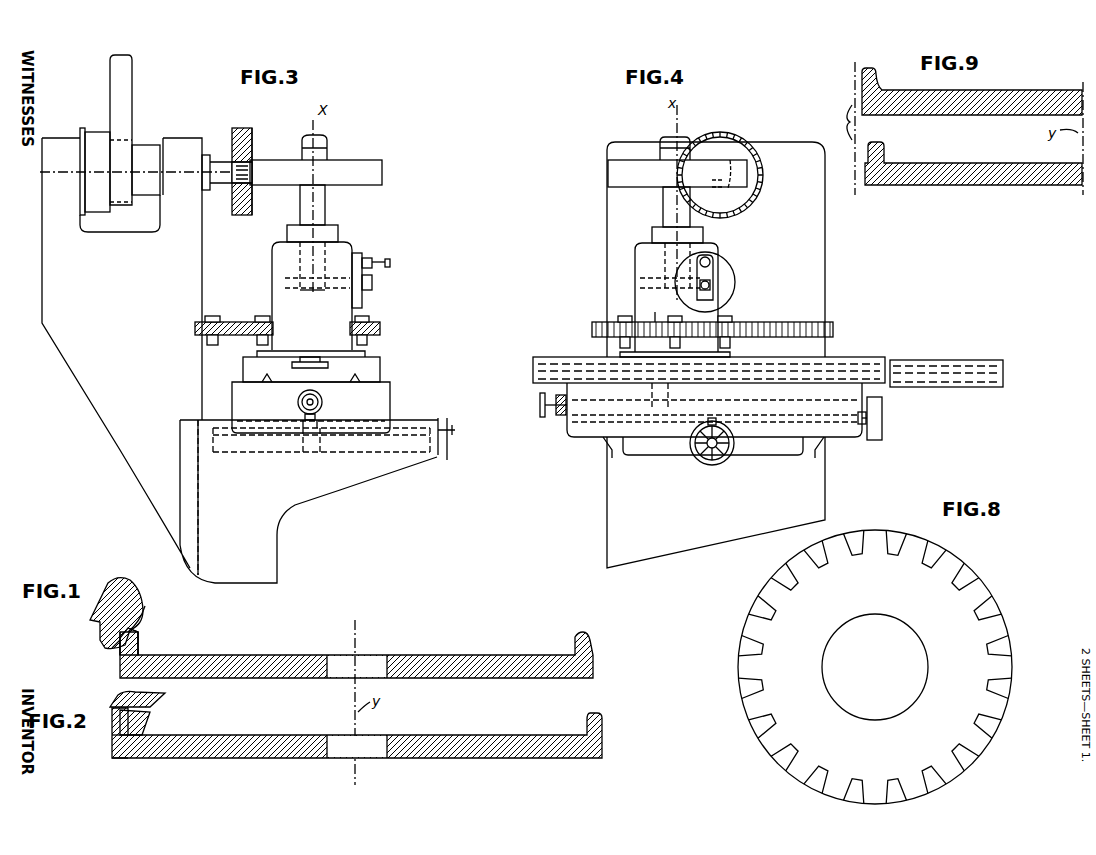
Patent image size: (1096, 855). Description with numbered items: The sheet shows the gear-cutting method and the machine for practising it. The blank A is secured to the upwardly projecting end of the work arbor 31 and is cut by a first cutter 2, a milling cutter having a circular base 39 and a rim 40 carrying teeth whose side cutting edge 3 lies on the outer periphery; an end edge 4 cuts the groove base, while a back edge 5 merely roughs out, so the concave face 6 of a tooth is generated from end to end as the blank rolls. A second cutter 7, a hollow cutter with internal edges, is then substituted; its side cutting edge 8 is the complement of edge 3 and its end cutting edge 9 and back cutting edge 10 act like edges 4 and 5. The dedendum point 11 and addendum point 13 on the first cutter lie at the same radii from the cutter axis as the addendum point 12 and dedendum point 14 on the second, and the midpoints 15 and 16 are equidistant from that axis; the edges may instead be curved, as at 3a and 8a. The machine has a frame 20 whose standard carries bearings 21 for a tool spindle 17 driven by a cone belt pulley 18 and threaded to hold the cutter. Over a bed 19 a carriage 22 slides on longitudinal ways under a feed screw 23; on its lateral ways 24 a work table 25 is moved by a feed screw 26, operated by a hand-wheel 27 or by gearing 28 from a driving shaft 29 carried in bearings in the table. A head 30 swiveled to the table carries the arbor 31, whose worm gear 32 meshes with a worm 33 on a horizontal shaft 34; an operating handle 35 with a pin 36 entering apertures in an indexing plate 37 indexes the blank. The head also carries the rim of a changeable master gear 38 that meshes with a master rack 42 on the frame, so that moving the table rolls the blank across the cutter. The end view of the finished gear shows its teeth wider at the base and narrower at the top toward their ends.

In FIG. 3, the first cutter 2 is at (235, 126).
In FIG. 4, the first cutter 2 is at (742, 134).
In FIG. 1, the first cutter 2 is at (200, 655).
In FIG. 1, the side cutting edge 3 is at (118, 646).
In FIG. 9, the curved cutting edge 3a is at (868, 148).
In FIG. 1, the end edge 4 is at (136, 630).
In FIG. 1, the back edge 5 is at (140, 636).
In FIG. 1, the concave face of the tooth 6 is at (100, 640).
In FIG. 2, the second cutter 7 is at (230, 735).
In FIG. 2, the side cutting edge 8 is at (118, 738).
In FIG. 9, the curved cutting edge 8a is at (880, 78).
In FIG. 2, the end cutting edge 9 is at (112, 720).
In FIG. 2, the back cutting edge 10 is at (114, 728).
In FIG. 1, the dedendum point 11 is at (143, 603).
In FIG. 2, the addendum point 12 is at (114, 758).
In FIG. 1, the addendum point 13 is at (120, 658).
In FIG. 2, the dedendum point 14 is at (152, 693).
In FIG. 1, the midpoint 15 is at (140, 648).
In FIG. 2, the midpoint 16 is at (146, 722).
In FIG. 3, the tool spindle 17 is at (186, 172).
In FIG. 3, the cone belt pulley 18 is at (147, 145).
In FIG. 3, the bed 19 is at (378, 470).
In FIG. 3, the frame 20 is at (239, 360).
In FIG. 4, the frame 20 is at (825, 252).
In FIG. 3, the bearings 21 is at (66, 128).
In FIG. 3, the carriage 22 is at (390, 400).
In FIG. 4, the carriage 22 is at (714, 410).
In FIG. 3, the feed screw 23 is at (336, 454).
In FIG. 4, the feed screw 23 is at (698, 456).
In FIG. 3, the lateral ways 24 is at (360, 378).
In FIG. 3, the work table 25 is at (382, 364).
In FIG. 4, the work table 25 is at (548, 362).
In FIG. 3, the feed screw 26 is at (298, 402).
In FIG. 4, the feed screw 26 is at (852, 420).
In FIG. 3, the hand-wheel 27 is at (322, 398).
In FIG. 4, the hand-wheel 27 is at (540, 396).
In FIG. 3, the gearing 28 is at (309, 414).
In FIG. 4, the gearing 28 is at (556, 412).
In FIG. 4, the driving shaft 29 is at (782, 420).
In FIG. 3, the head 30 is at (276, 252).
In FIG. 4, the head 30 is at (638, 242).
In FIG. 3, the work arbor 31 is at (326, 205).
In FIG. 4, the work arbor 31 is at (666, 205).
In FIG. 3, the worm gear 32 is at (303, 292).
In FIG. 4, the worm gear 32 is at (646, 275).
In FIG. 3, the worm 33 is at (340, 282).
In FIG. 3, the horizontal shaft 34 is at (282, 278).
In FIG. 4, the horizontal shaft 34 is at (712, 284).
In FIG. 3, the operating handle 35 is at (372, 250).
In FIG. 3, the pin 36 is at (390, 259).
In FIG. 4, the pin 36 is at (677, 266).
In FIG. 3, the indexing plate 37 is at (372, 282).
In FIG. 4, the indexing plate 37 is at (730, 262).
In FIG. 3, the master gear 38 is at (376, 326).
In FIG. 4, the master gear 38 is at (653, 308).
In FIG. 3, the base of cutter 39 is at (233, 196).
In FIG. 4, the base of cutter 39 is at (740, 198).
In FIG. 3, the rim of cutter 40 is at (244, 126).
In FIG. 3, the master rack 42 is at (226, 322).
In FIG. 4, the master rack 42 is at (810, 326).
In FIG. 3, the blank A is at (366, 156).
In FIG. 4, the blank A is at (616, 178).
In FIG. 1, the blank A is at (138, 590).